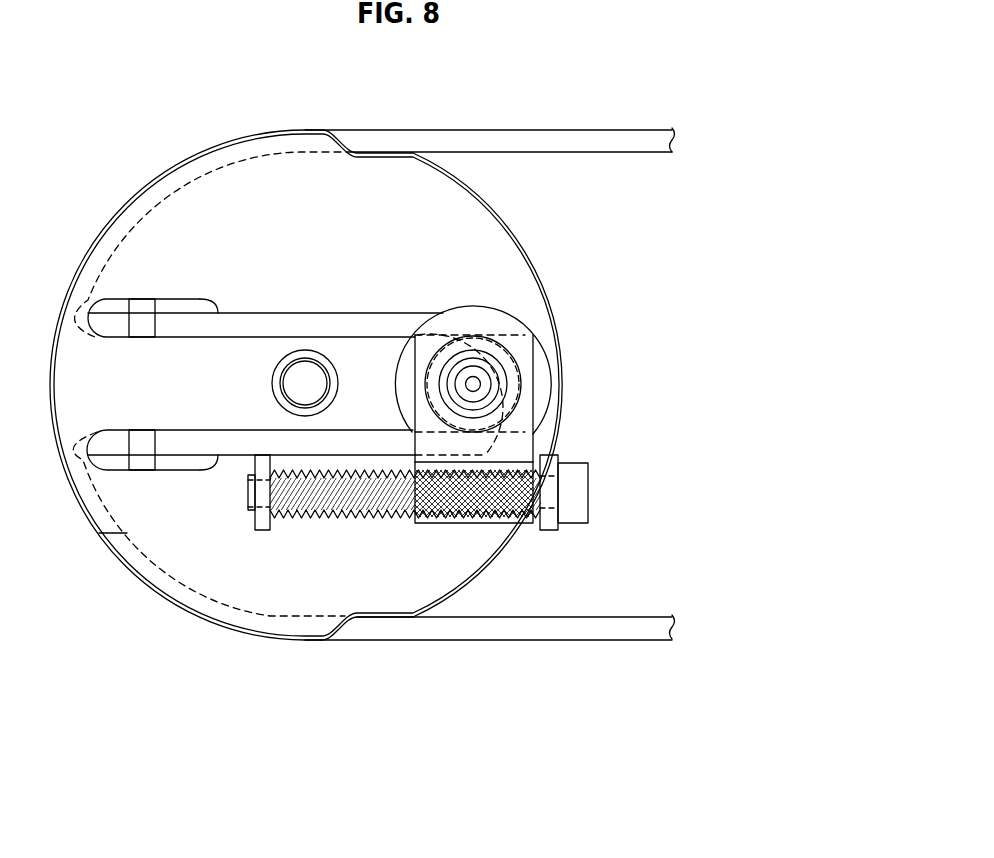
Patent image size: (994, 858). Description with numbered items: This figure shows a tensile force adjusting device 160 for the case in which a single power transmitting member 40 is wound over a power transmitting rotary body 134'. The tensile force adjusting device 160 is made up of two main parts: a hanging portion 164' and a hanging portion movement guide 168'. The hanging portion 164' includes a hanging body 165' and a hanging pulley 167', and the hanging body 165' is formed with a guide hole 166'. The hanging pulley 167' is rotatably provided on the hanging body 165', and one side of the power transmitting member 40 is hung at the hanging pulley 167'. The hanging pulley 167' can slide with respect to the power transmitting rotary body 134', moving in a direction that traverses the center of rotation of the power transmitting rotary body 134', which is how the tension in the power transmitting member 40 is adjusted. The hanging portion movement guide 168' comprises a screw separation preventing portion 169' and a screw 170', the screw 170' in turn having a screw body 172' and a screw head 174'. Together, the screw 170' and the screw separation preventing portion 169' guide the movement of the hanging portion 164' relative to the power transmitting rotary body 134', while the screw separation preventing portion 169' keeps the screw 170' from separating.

The power transmitting member 40 is at (547, 131).
The power transmitting rotary body 134' is at (306, 373).
The tensile force adjusting device 160 is at (409, 463).
The hanging portion 164' is at (582, 394).
The hanging body 165' is at (557, 384).
The guide hole 166' is at (552, 429).
The hanging pulley 167' is at (542, 366).
The hanging portion movement guide 168' is at (425, 637).
The screw separation preventing portion 169' is at (394, 611).
The screw 170' is at (525, 611).
The screw body 172' is at (513, 582).
The screw head 174' is at (571, 586).